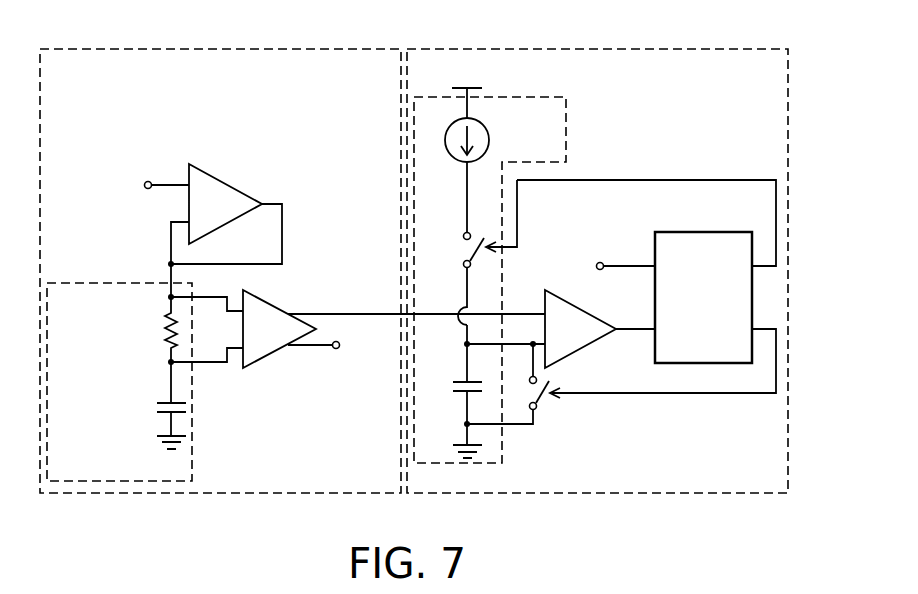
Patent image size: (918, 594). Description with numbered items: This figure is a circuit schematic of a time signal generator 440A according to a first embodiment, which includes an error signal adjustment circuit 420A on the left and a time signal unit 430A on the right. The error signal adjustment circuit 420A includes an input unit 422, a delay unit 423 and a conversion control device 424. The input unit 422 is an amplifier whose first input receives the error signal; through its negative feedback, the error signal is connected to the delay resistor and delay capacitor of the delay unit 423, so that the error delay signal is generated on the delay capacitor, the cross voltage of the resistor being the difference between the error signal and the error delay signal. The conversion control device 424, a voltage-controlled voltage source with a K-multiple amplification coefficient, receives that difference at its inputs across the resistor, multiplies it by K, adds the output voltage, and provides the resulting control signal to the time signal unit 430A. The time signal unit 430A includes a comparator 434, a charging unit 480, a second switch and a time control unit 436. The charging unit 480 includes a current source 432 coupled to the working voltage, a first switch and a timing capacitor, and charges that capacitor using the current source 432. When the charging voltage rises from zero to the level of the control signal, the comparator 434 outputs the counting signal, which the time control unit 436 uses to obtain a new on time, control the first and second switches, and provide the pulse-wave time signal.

The error signal adjustment circuit 420A is at (232, 49).
The input unit 422 is at (228, 183).
The delay unit 423 is at (192, 425).
The conversion control device 424 is at (268, 357).
The time signal unit 430A is at (622, 49).
The current source 432 is at (483, 118).
The comparator 434 is at (565, 360).
The time control unit 436 is at (685, 223).
The charging unit 480 is at (567, 121).
The time signal generator 440A is at (787, 541).